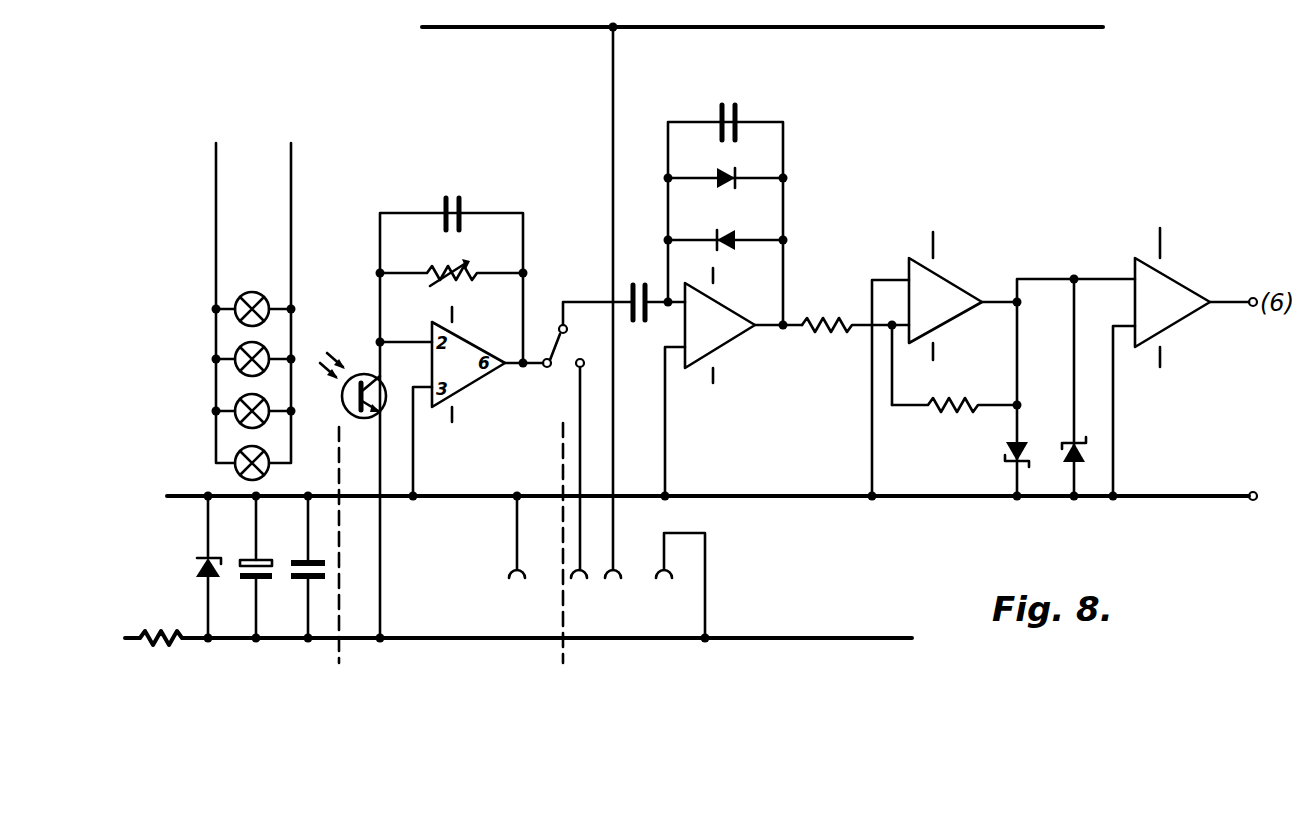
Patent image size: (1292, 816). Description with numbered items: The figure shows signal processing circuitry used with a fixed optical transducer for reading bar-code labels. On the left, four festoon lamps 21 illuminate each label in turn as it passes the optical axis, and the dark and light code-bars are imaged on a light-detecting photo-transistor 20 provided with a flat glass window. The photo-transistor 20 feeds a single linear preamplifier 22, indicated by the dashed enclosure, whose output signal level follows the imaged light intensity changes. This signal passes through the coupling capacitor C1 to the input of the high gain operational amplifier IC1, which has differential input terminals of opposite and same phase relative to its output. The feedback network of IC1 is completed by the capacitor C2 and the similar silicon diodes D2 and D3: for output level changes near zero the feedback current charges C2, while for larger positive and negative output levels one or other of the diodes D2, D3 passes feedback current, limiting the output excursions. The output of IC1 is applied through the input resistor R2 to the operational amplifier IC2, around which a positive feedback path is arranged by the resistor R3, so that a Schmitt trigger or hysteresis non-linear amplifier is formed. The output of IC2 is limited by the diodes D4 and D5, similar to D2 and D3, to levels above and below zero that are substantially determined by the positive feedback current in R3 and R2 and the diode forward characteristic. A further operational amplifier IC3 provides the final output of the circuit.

The photo-transistor 20 is at (370, 377).
The festoon lamps 21 is at (253, 286).
The preamplifier 22 is at (563, 663).
The capacitor C1 is at (633, 285).
The capacitor C2 is at (737, 120).
The silicon diode D2 is at (726, 174).
The silicon diode D3 is at (726, 236).
The diode D4 is at (1006, 459).
The diode D5 is at (1066, 452).
The input resistor R2 is at (855, 339).
The positive feedback resistor R3 is at (954, 419).
The operational amplifier IC1 is at (733, 382).
The operational amplifier IC2 is at (963, 296).
The operational amplifier IC3 is at (1181, 362).